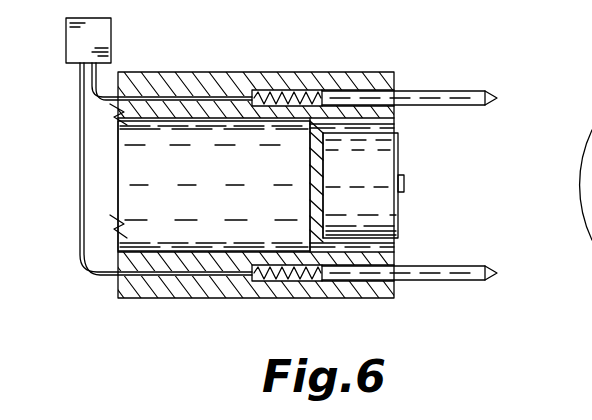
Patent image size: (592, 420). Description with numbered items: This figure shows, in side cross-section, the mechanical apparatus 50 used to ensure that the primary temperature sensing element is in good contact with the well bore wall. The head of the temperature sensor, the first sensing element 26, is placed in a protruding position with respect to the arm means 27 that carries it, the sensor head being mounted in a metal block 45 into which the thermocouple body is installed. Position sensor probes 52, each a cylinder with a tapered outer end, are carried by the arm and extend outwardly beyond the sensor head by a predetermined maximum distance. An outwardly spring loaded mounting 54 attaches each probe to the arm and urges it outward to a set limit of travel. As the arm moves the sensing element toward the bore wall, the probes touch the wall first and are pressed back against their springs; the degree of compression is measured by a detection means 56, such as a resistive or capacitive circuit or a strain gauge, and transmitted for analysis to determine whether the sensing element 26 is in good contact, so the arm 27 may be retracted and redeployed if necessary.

The first sensing element 26 is at (406, 184).
The arm means 27 is at (214, 72).
The metal block 45 is at (385, 151).
The mechanical apparatus 50 is at (213, 300).
The position sensor probes 52 is at (450, 92).
The outwardly spring loaded mounting 54 is at (297, 96).
The detection means 56 is at (104, 29).